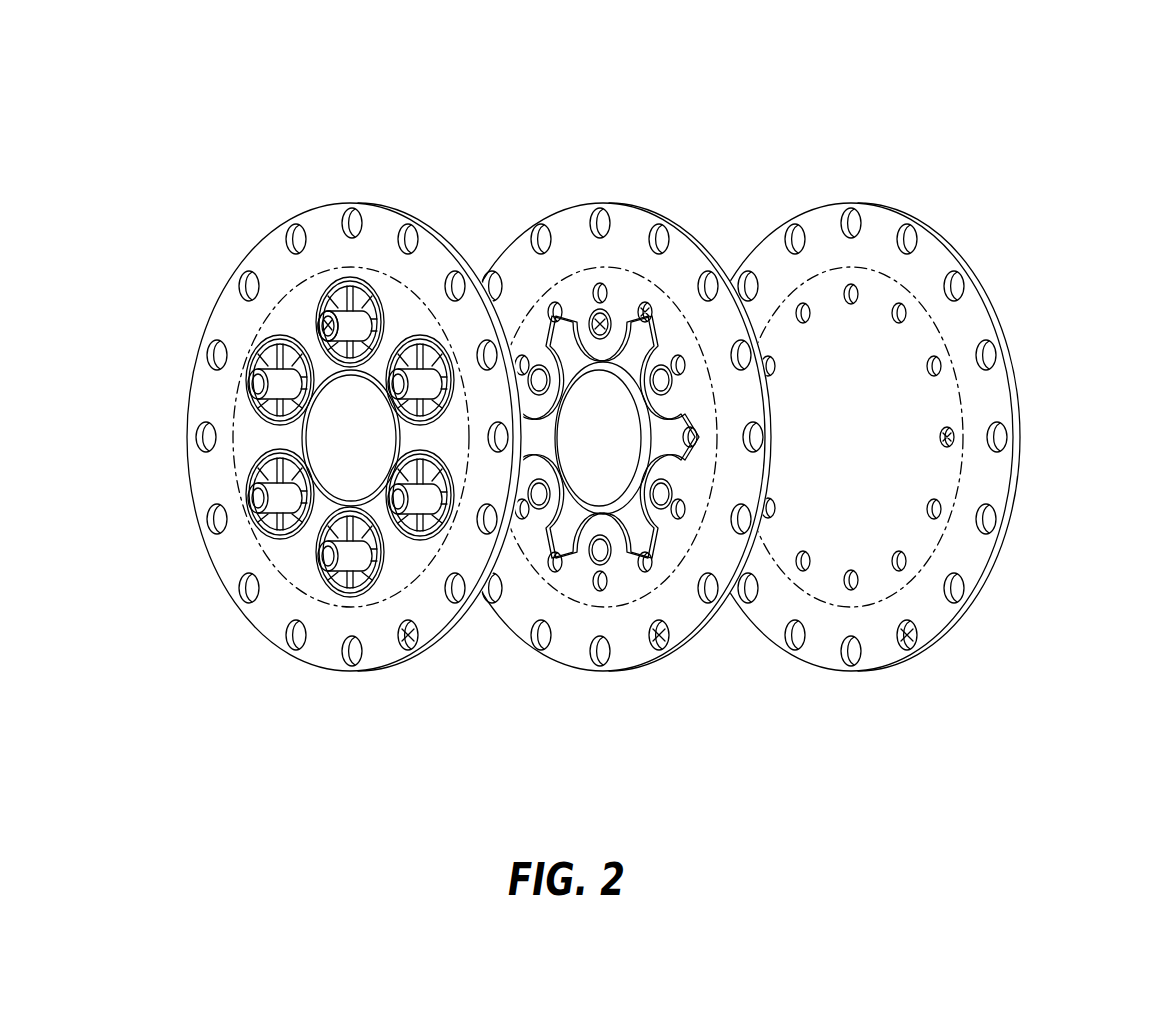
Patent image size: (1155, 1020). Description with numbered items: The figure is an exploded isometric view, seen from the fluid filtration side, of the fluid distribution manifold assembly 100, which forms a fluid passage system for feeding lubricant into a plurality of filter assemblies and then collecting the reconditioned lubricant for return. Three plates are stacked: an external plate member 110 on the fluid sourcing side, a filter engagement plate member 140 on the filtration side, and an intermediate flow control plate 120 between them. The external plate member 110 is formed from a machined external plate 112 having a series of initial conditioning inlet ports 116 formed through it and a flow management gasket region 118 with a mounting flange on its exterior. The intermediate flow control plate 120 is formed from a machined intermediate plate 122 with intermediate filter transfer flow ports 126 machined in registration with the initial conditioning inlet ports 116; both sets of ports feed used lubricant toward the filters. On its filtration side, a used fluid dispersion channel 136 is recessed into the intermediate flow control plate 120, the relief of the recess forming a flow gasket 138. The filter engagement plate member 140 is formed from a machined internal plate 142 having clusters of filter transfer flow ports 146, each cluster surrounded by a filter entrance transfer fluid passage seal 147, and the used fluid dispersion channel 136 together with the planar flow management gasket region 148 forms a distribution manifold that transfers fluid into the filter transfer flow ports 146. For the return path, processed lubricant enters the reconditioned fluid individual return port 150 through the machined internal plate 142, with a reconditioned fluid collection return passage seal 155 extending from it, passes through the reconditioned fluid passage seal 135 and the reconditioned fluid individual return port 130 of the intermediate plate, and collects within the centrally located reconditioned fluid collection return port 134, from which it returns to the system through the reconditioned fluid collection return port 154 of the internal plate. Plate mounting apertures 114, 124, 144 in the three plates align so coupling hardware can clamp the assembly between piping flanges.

The fluid distribution manifold assembly 100 is at (1068, 116).
The external plate member 110 is at (960, 214).
The machined external plate 112 is at (812, 650).
The plate mounting apertures 114 is at (900, 640).
The initial conditioning inlet ports 116 is at (942, 440).
The flow management gasket region 118 is at (858, 452).
The intermediate flow control plate 120 is at (684, 204).
The machined intermediate plate 122 is at (566, 650).
The plate mounting apertures 124 is at (650, 640).
The intermediate filter transfer flow ports 126 is at (641, 306).
The reconditioned fluid individual return port 130 is at (570, 338).
The reconditioned fluid collection return port 134 is at (618, 452).
The reconditioned fluid passage seal 135 is at (590, 322).
The used fluid dispersion channel 136 is at (650, 566).
The flow gasket 138 is at (548, 568).
The filter engagement plate member 140 is at (432, 186).
The machined internal plate 142 is at (320, 650).
The plate mounting apertures 144 is at (407, 640).
The filter transfer flow ports 146 is at (326, 292).
The filter entrance transfer fluid passage seal 147 is at (255, 462).
The flow management gasket region 148 is at (278, 556).
The reconditioned fluid individual return port 150 is at (318, 325).
The reconditioned fluid collection return port 154 is at (373, 452).
The reconditioned fluid collection return passage seal 155 is at (252, 348).